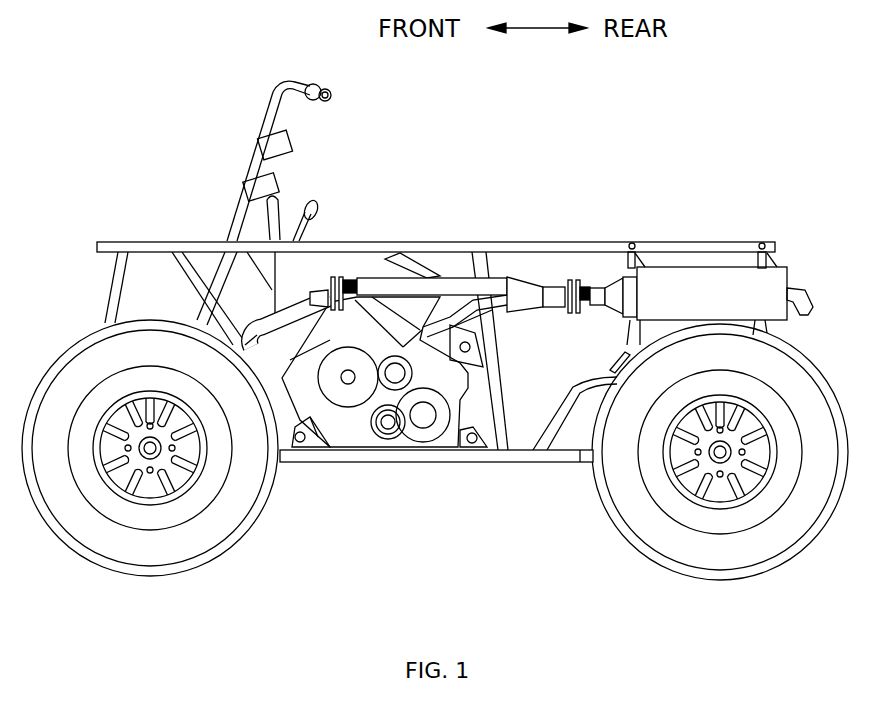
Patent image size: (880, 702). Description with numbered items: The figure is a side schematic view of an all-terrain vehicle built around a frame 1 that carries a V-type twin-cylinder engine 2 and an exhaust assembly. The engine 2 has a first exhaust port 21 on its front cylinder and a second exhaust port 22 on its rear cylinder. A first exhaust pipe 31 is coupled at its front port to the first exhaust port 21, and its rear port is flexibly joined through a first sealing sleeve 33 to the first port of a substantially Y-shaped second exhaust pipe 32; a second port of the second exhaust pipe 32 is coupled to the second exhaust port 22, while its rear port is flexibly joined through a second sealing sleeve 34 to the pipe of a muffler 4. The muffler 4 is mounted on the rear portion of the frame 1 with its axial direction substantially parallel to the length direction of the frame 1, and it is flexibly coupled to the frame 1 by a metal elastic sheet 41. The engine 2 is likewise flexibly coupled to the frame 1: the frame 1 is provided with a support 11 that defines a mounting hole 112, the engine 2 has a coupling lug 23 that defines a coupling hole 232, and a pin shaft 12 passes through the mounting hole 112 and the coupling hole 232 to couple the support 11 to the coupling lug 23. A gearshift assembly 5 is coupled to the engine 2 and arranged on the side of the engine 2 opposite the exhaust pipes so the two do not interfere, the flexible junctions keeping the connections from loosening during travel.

The frame 1 is at (153, 247).
The gearshift assembly 5 is at (308, 217).
The V-type twin-cylinder engine 2 is at (348, 432).
The second exhaust port 22 is at (422, 412).
The coupling lug 23 is at (312, 447).
The coupling hole 232 is at (305, 450).
The first exhaust port 21 is at (300, 442).
The pin shaft 12 is at (476, 443).
The support 11 is at (478, 446).
The mounting hole 112 is at (490, 447).
The first exhaust pipe 31 is at (288, 302).
The first sealing sleeve 33 is at (357, 281).
The second exhaust pipe 32 is at (493, 293).
The second sealing sleeve 34 is at (577, 287).
The muffler 4 is at (688, 282).
The metal elastic sheet 41 is at (773, 262).